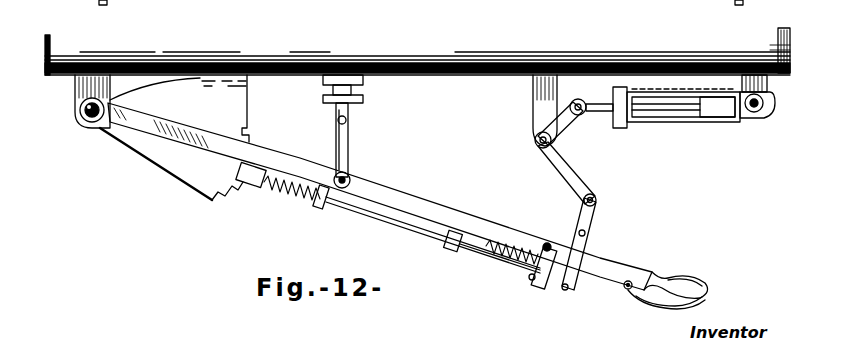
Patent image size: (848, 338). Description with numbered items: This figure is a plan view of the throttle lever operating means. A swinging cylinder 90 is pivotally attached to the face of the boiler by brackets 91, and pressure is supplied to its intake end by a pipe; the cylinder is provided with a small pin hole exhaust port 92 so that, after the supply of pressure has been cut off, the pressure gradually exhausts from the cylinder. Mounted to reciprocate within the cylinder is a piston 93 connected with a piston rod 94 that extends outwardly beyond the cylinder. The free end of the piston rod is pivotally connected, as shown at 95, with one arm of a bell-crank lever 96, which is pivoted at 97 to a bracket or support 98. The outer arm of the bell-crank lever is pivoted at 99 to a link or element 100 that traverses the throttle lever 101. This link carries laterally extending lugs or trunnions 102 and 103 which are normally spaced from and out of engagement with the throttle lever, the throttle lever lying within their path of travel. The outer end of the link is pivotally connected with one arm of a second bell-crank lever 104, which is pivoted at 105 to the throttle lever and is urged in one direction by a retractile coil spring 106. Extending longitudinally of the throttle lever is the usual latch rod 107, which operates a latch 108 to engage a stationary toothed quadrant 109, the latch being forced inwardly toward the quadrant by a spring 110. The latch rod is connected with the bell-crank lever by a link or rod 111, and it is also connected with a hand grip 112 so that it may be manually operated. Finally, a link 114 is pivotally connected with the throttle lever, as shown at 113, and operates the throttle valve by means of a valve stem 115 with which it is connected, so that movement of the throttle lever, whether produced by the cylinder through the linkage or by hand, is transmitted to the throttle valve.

The swinging cylinder 90 is at (700, 124).
The brackets 91 is at (756, 120).
The pin hole exhaust port 92 is at (735, 122).
The piston 93 is at (642, 125).
The piston rod 94 is at (655, 89).
The pivotal connection 95 is at (588, 115).
The bell-crank lever 96 is at (558, 170).
The pivot 97 is at (535, 141).
The bracket or support 98 is at (536, 100).
The pivot 99 is at (597, 200).
The link or element 100 is at (580, 218).
The throttle lever 101 is at (445, 208).
The lug or trunnion 102 is at (590, 234).
The lug or trunnion 103 is at (597, 264).
The bell-crank lever 104 is at (540, 282).
The pivot 105 is at (496, 262).
The retractile coil spring 106 is at (452, 252).
The latch rod 107 is at (352, 215).
The latch 108 is at (250, 186).
The stationary toothed quadrant 109 is at (203, 208).
The spring 110 is at (296, 199).
The link or rod 111 is at (510, 272).
The hand grip 112 is at (662, 306).
The pivotal connection 113 is at (352, 180).
The link 114 is at (335, 149).
The valve stem 115 is at (351, 110).